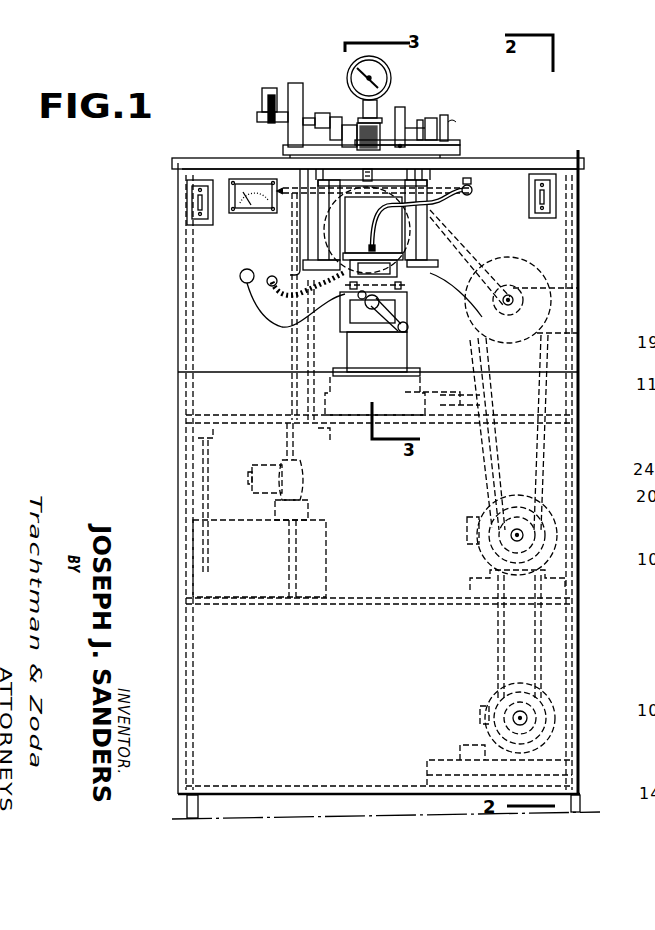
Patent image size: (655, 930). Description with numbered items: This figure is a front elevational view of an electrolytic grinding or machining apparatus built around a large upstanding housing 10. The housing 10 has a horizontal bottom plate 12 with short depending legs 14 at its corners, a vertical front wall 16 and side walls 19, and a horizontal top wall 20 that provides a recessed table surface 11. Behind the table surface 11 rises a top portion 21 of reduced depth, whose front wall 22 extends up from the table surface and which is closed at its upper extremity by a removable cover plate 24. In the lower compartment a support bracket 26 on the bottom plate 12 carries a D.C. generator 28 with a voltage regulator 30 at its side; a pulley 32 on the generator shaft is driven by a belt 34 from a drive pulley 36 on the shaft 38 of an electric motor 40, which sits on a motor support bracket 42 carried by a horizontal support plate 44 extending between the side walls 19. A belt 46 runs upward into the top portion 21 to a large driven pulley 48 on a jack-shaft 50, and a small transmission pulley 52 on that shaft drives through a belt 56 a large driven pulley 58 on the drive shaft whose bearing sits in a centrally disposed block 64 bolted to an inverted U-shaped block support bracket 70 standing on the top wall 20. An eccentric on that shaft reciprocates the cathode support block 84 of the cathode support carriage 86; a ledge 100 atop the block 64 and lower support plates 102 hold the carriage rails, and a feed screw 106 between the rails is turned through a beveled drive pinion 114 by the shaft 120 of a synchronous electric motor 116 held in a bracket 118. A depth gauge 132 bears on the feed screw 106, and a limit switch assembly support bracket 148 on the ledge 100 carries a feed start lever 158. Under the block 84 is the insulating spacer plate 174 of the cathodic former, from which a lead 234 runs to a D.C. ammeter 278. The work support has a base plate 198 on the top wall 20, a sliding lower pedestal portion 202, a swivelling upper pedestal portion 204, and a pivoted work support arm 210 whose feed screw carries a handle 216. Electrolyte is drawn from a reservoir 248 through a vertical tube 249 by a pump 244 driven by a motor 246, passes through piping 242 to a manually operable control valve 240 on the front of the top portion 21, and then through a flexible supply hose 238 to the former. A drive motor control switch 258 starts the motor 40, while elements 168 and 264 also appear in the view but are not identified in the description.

The housing 10 is at (605, 716).
The table surface 11 is at (560, 405).
The bottom plate 12 is at (310, 786).
The legs 14 is at (200, 800).
The front wall 16 is at (366, 689).
The side walls 19 is at (190, 718).
The top wall 20 is at (472, 430).
The top portion 21 is at (548, 163).
The front wall of top portion 22 is at (540, 240).
The cover plate 24 is at (520, 158).
The support bracket 26 is at (430, 758).
The D.C. generator 28 is at (545, 700).
The voltage regulator 30 is at (465, 745).
The pulley 32 is at (560, 700).
The belt 34 is at (498, 635).
The drive pulley 36 is at (478, 548).
The motor shaft 38 is at (560, 525).
The electric motor 40 is at (515, 495).
The motor support bracket 42 is at (470, 584).
The horizontal support plate 44 is at (360, 606).
The belt 46 is at (490, 470).
The driven pulley 48 is at (578, 333).
The jack-shaft 50 is at (578, 288).
The transmission pulley 52 is at (508, 262).
The belt 56 is at (463, 237).
The driven pulley 58 is at (440, 208).
The block 64 is at (318, 214).
The block support bracket 70 is at (340, 342).
The cathode support block 84 is at (377, 218).
The cathode support carriage 86 is at (430, 178).
The ledge 100 is at (440, 150).
The lower support plates 102 is at (300, 290).
The feed screw 106 is at (305, 146).
The beveled drive pinion 114 is at (352, 120).
The synchronous electric motor 116 is at (262, 122).
The bracket 118 is at (270, 90).
The motor shaft 120 is at (313, 97).
The depth gauge 132 is at (392, 72).
The limit switch assembly support bracket 148 is at (421, 118).
The feed start lever 158 is at (397, 107).
The disc 168 is at (446, 115).
The spacer plate 174 is at (340, 254).
The base plate 198 is at (462, 398).
The lower pedestal portion 202 is at (405, 362).
The upper pedestal portion 204 is at (390, 348).
The work support arm 210 is at (377, 352).
The handle 216 is at (408, 317).
The lead 234 is at (300, 333).
The electrolyte supply hose 238 is at (455, 177).
The control valve 240 is at (473, 188).
The piping 242 is at (282, 388).
The pump 244 is at (300, 490).
The pump motor 246 is at (262, 468).
The reservoir 248 is at (326, 548).
The vertical tube 249 is at (198, 452).
The drive motor control switch 258 is at (550, 194).
The left switch 264 is at (186, 202).
The D.C. ammeter 278 is at (240, 180).